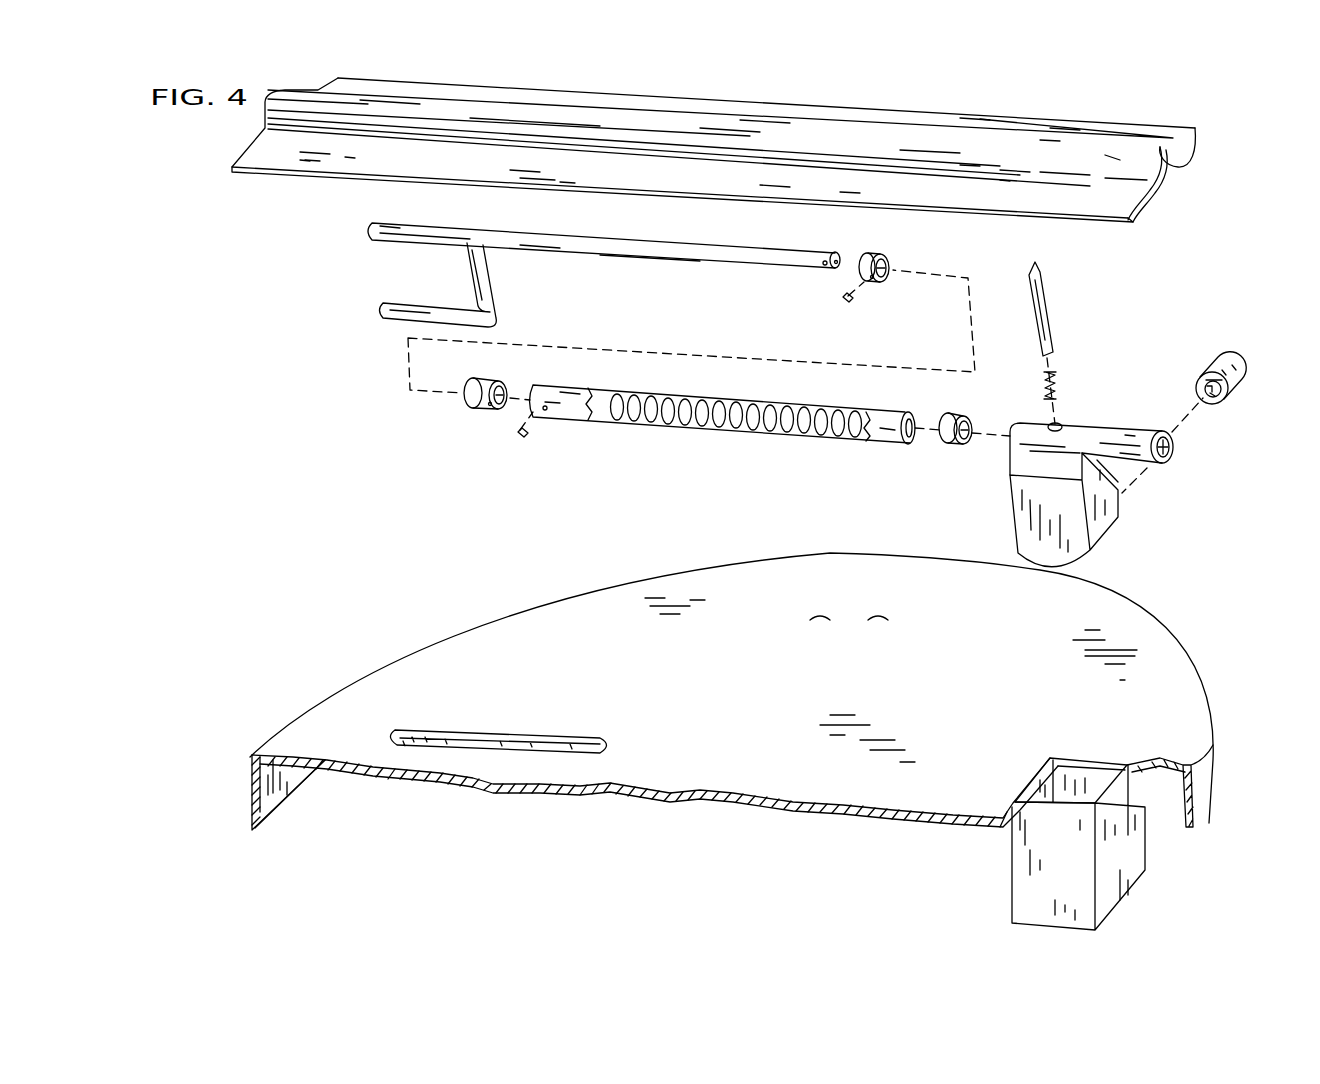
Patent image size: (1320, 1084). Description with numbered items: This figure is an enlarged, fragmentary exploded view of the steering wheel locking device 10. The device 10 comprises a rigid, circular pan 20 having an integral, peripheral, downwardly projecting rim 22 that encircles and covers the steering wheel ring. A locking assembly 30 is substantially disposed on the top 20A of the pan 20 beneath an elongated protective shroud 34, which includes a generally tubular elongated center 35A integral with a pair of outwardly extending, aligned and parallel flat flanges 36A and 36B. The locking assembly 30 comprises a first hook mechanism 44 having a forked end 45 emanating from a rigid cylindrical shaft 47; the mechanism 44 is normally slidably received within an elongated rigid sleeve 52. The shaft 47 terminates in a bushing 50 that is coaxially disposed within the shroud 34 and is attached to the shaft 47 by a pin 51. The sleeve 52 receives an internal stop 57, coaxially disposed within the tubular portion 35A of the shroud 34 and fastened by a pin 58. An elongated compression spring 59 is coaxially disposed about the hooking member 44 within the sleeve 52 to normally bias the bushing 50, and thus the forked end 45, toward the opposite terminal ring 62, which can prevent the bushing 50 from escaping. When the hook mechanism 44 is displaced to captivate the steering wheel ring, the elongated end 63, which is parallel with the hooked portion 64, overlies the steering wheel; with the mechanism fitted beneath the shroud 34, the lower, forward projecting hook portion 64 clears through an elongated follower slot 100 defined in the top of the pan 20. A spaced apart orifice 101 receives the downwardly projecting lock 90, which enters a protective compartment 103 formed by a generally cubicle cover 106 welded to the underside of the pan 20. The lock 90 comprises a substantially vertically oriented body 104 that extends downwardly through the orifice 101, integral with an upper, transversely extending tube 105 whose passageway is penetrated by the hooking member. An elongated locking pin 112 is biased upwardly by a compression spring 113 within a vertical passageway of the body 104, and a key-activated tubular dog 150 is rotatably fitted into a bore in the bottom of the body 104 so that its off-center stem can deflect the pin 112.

The device 10 is at (305, 545).
The pan 20 is at (450, 592).
The top of pan 20A is at (893, 620).
The rim 22 is at (298, 792).
The locking assembly 30 is at (1088, 324).
The shroud 34 is at (232, 137).
The tubular elongated center 35A is at (1118, 150).
The flat flange 36A is at (968, 120).
The flat flange 36B is at (330, 158).
The first hook mechanism 44 is at (570, 225).
The forked end 45 is at (385, 279).
The cylindrical shaft 47 is at (788, 256).
The bushing 50 is at (880, 254).
The pin 51 is at (838, 300).
The sleeve 52 is at (560, 410).
The internal stop 57 is at (468, 410).
The pin 58 is at (516, 437).
The compression spring 59 is at (665, 423).
The terminal ring 62 is at (947, 446).
The elongated end 63 is at (410, 230).
The hook portion 64 is at (400, 318).
The lock 90 is at (1069, 465).
The follower slot 100 is at (500, 744).
The orifice 101 is at (1052, 762).
The protective compartment 103 is at (1086, 780).
The body 104 is at (1030, 550).
The tube 105 is at (1112, 430).
The cover 106 is at (1020, 870).
The locking pin 112 is at (1068, 302).
The compression spring 113 is at (1045, 392).
The tubular dog 150 is at (1238, 345).